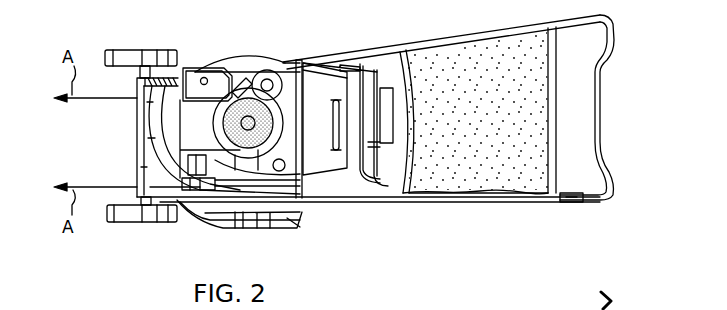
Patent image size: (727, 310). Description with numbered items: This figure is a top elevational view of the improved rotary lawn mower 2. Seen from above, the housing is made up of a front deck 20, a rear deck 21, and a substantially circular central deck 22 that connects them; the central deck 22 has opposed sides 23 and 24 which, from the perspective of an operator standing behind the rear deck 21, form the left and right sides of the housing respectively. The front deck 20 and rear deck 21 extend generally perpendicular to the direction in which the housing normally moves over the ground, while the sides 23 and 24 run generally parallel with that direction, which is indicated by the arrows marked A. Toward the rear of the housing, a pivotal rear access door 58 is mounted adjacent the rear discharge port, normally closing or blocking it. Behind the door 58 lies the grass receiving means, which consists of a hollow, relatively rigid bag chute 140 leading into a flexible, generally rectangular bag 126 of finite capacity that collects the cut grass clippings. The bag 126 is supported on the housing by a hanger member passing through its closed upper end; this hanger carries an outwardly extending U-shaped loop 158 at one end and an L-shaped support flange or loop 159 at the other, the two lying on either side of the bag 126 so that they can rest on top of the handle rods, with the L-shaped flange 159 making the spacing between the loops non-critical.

The front deck 20 is at (122, 140).
The rotary lawn mower 2 is at (263, 52).
The right side of central deck 24 is at (235, 66).
The central deck 22 is at (283, 60).
The rear access door 58 is at (318, 83).
The rear deck 21 is at (340, 53).
The bag chute 140 is at (387, 77).
The bag 126 is at (473, 52).
The U-shaped loop 158 is at (549, 27).
The L-shaped support flange 159 is at (552, 200).
The left side of central deck 23 is at (217, 218).